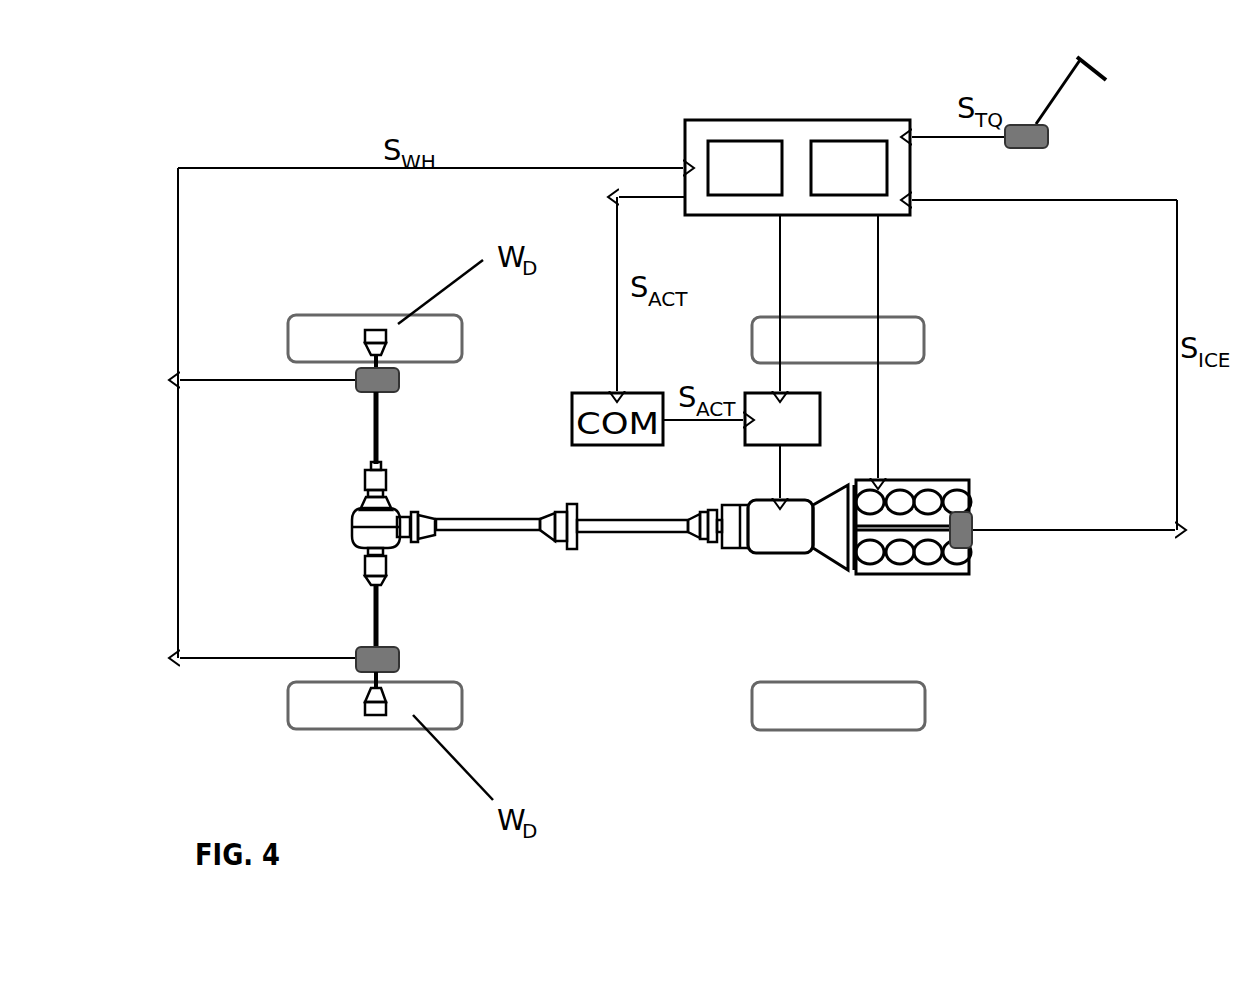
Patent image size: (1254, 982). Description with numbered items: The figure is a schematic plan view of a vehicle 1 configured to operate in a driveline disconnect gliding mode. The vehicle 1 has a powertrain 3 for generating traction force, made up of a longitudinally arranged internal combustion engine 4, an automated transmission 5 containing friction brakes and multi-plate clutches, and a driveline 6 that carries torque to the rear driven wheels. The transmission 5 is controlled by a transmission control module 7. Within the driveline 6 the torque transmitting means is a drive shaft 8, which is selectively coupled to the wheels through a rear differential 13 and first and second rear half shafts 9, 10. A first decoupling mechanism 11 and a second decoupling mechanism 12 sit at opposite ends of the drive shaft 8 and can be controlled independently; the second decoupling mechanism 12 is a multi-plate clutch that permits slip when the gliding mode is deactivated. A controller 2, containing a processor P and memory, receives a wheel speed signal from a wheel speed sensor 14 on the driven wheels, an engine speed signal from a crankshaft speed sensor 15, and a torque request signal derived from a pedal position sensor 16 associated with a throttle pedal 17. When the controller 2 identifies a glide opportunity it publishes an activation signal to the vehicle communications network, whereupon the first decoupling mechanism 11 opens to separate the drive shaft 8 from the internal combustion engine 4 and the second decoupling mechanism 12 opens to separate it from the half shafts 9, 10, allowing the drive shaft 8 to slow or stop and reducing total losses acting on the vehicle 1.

The vehicle 1 is at (972, 780).
The controller 2 is at (655, 117).
The powertrain 3 is at (872, 500).
The internal combustion engine 4 is at (932, 568).
The transmission 5 is at (793, 545).
The driveline 6 is at (505, 611).
The transmission control module 7 is at (757, 392).
The drive shaft 8 is at (612, 526).
The first rear half shaft 9 is at (370, 426).
The second rear half shaft 10 is at (372, 640).
The first decoupling mechanism 11 is at (730, 548).
The second decoupling mechanism 12 is at (388, 548).
The rear differential 13 is at (360, 537).
The wheel speed sensor 14 is at (393, 380).
The crankshaft speed sensor 15 is at (970, 530).
The pedal position sensor 16 is at (1035, 138).
The throttle pedal 17 is at (1065, 98).